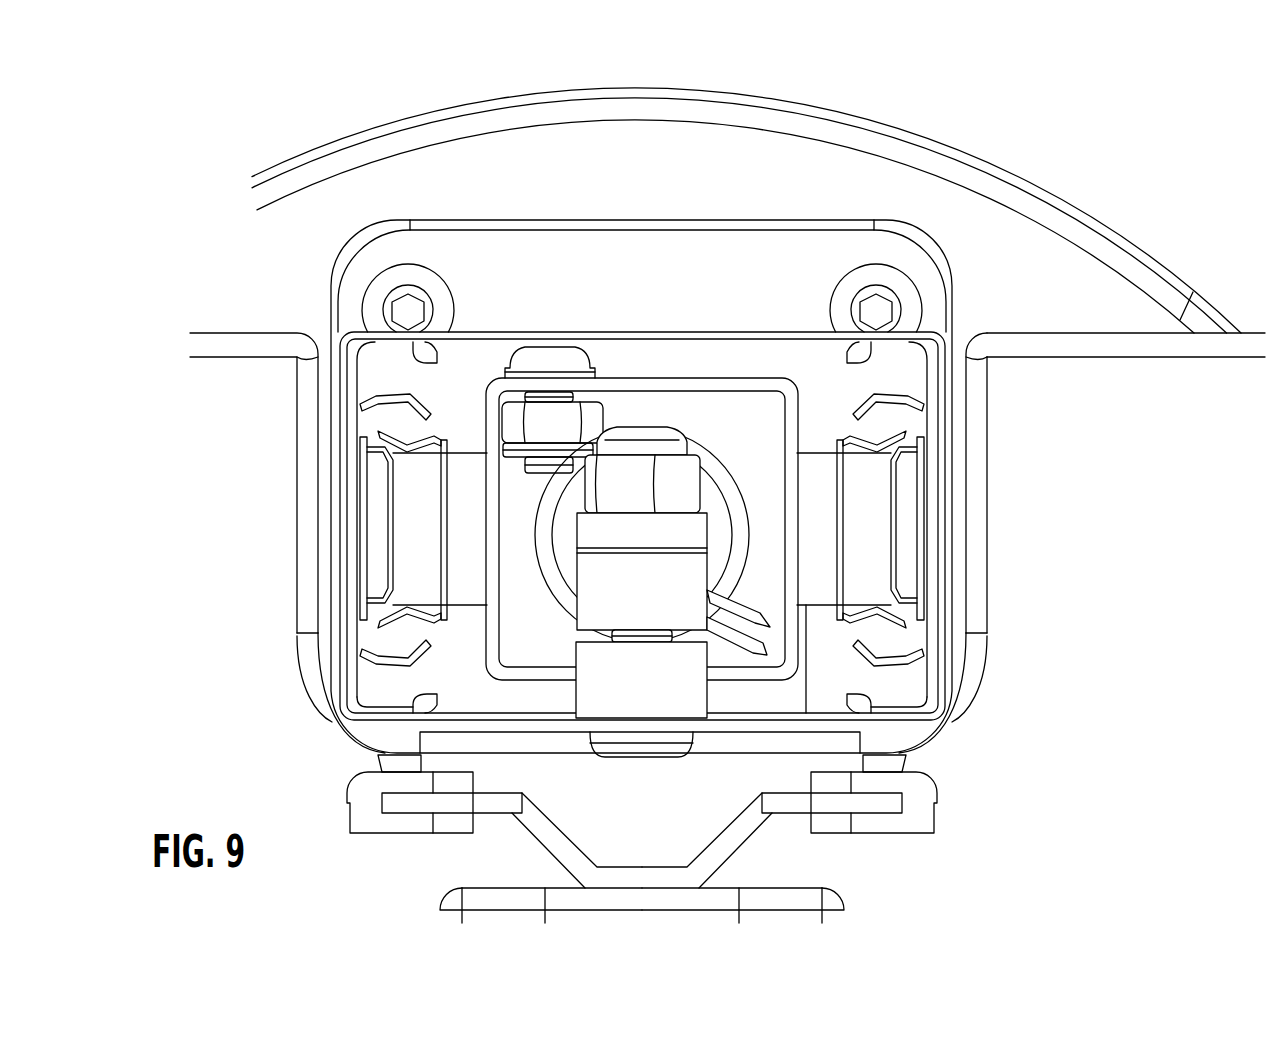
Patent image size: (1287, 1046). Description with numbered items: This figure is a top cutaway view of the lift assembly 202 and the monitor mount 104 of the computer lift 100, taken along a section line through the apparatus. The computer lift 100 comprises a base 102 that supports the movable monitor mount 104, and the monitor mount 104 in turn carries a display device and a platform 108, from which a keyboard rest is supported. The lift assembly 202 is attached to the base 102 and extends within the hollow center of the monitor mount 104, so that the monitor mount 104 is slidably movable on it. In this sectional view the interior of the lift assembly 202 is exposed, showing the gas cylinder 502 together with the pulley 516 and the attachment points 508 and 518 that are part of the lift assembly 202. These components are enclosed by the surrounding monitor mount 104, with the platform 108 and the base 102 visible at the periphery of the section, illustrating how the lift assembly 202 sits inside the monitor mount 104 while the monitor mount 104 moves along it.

The computer lift 100 is at (1096, 507).
The base 102 is at (1105, 226).
The monitor mount 104 is at (958, 527).
The platform 108 is at (262, 437).
The lift assembly 202 is at (706, 368).
The gas cylinder 502 is at (727, 480).
The attachment point 508 is at (576, 697).
The pulley 516 is at (750, 607).
The attachment point 518 is at (505, 460).